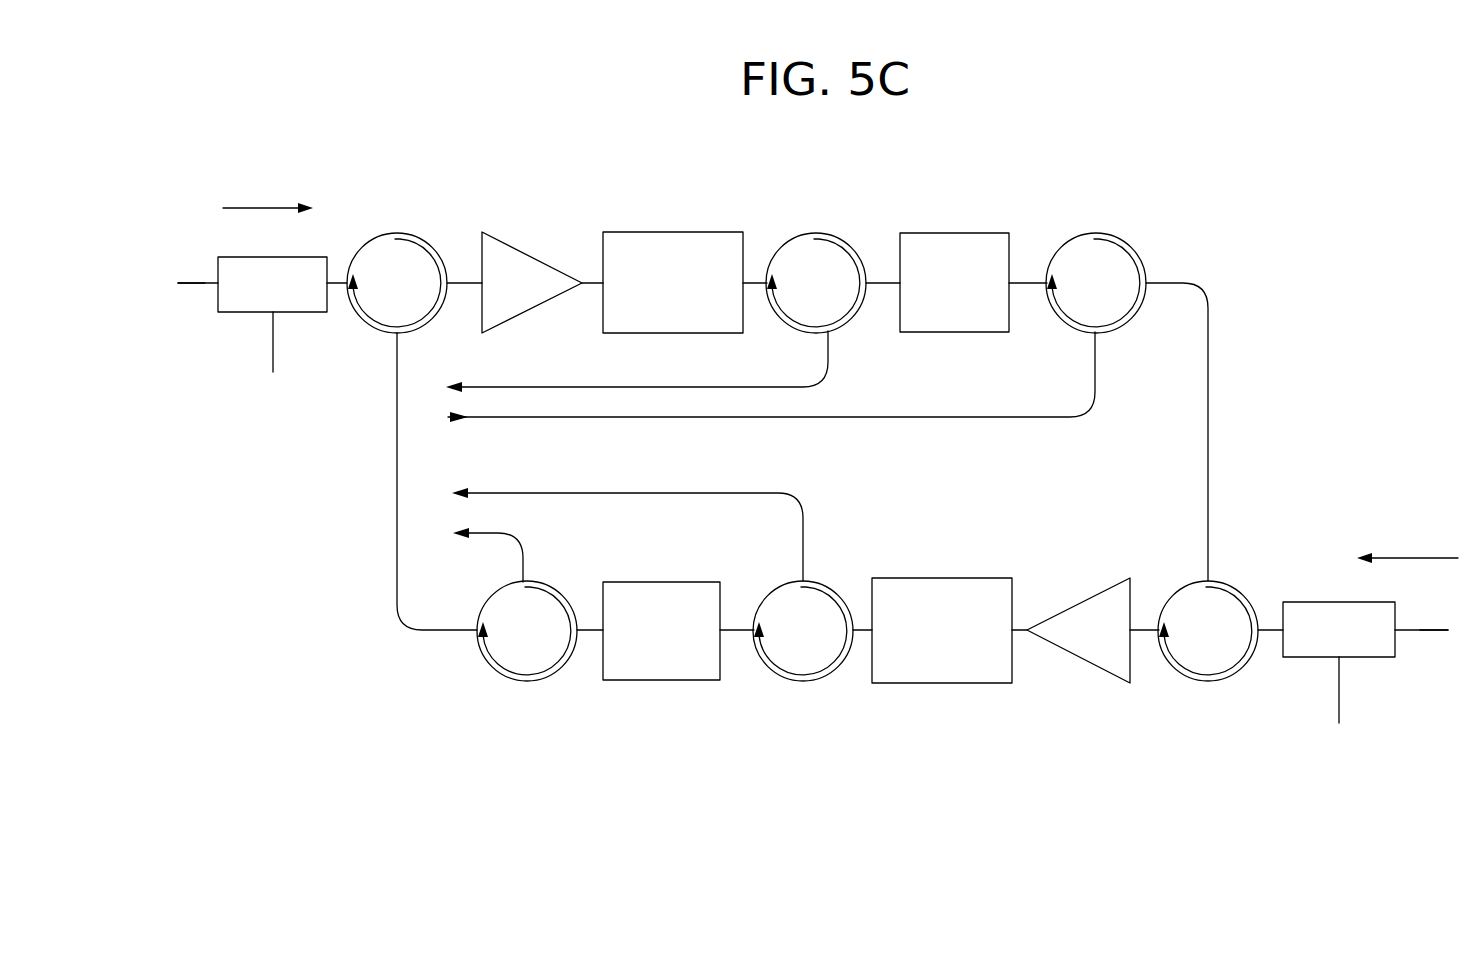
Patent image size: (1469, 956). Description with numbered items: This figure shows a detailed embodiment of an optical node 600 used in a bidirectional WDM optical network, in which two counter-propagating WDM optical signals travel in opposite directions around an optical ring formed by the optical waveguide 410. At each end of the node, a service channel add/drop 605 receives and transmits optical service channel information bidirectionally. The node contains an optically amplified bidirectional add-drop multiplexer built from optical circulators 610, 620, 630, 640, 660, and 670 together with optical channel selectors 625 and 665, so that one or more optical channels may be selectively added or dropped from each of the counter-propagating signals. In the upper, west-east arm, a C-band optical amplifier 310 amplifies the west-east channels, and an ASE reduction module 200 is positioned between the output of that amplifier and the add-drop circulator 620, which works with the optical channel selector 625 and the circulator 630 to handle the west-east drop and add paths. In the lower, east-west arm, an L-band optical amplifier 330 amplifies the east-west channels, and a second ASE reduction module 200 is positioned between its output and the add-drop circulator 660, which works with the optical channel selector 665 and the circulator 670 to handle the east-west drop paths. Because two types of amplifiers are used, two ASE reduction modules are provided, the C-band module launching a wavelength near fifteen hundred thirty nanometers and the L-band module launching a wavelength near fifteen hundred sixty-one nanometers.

The optical node 600 is at (1030, 168).
The optical waveguide 410 is at (205, 283).
The service channel add/drop 605 is at (303, 275).
The optical circulator 610 is at (413, 233).
The C-band optical amplifier 310 is at (535, 257).
The ASE reduction module 200 is at (692, 232).
The optical circulator 620 is at (833, 233).
The optical channel selector 625 is at (980, 233).
The optical circulator 630 is at (1122, 235).
The optical circulator 640 is at (1213, 683).
The L-band optical amplifier 330 is at (1098, 670).
The optical circulator 660 is at (785, 682).
The optical channel selector 665 is at (691, 582).
The optical circulator 670 is at (515, 682).